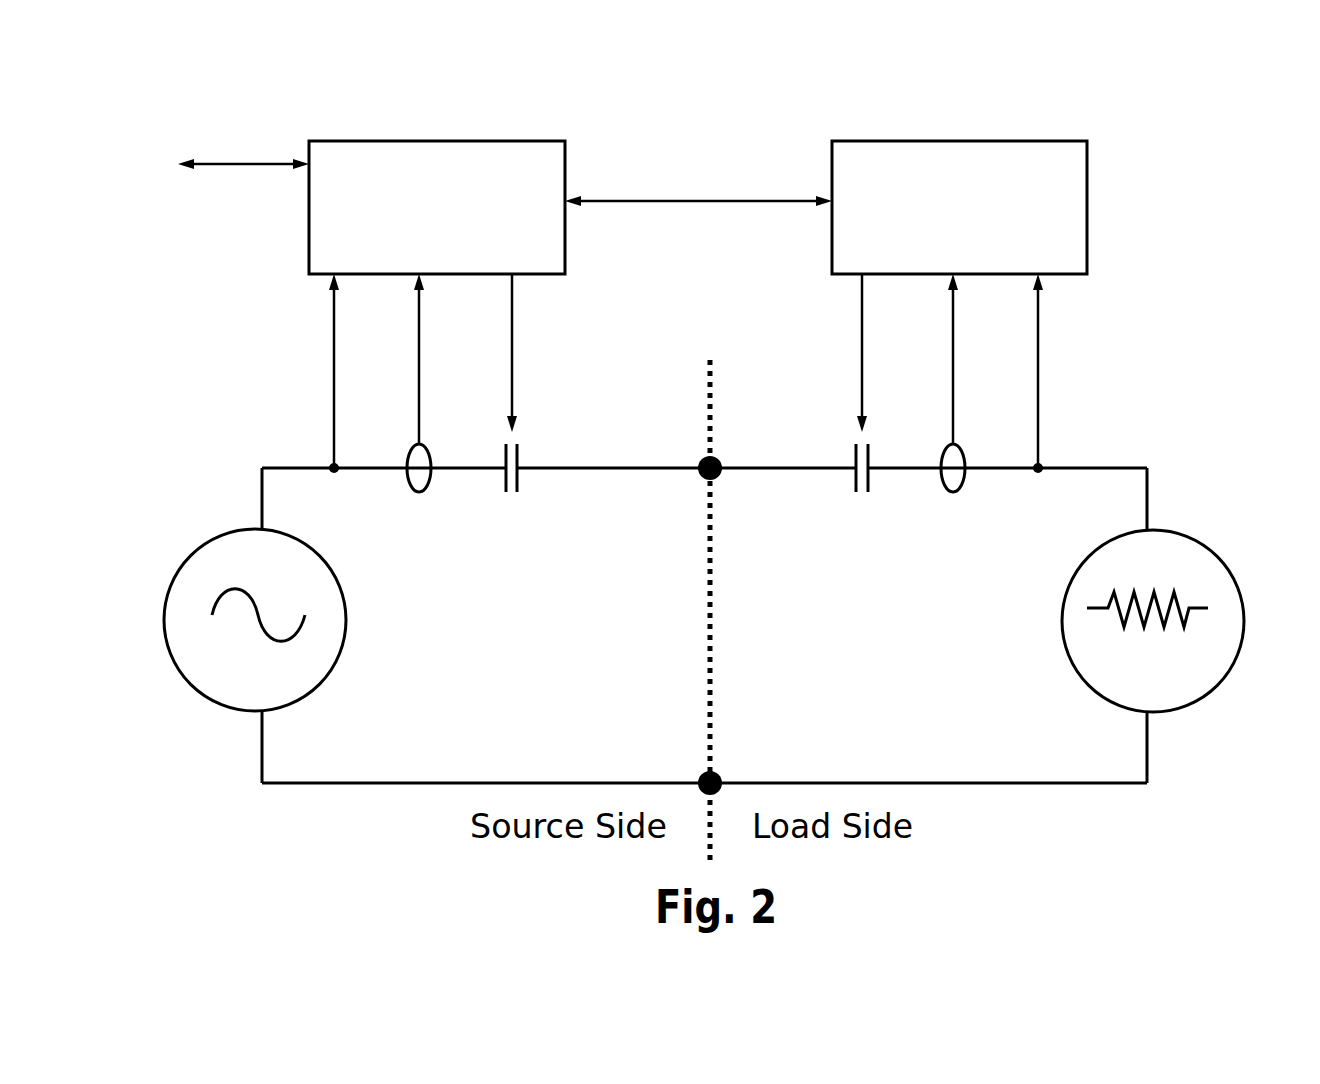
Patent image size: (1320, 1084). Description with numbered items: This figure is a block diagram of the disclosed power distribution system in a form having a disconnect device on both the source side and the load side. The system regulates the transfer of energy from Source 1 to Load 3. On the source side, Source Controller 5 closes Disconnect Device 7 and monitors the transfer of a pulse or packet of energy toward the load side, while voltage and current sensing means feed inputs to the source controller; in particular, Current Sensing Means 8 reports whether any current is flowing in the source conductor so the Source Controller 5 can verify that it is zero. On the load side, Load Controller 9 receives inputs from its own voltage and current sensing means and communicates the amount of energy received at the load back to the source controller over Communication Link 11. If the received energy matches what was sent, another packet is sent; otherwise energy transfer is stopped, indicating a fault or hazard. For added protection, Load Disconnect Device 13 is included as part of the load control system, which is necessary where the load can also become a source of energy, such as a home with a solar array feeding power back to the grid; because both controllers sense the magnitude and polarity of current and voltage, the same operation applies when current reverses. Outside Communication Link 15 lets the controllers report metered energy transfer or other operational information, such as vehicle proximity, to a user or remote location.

The Source 1 is at (225, 517).
The Load 3 is at (1243, 553).
The Source Controller 5 is at (297, 273).
The Disconnect Device 7 is at (528, 492).
The Current Sensing Means 8 is at (430, 492).
The Load Controller 9 is at (1110, 189).
The Communication Link 11 is at (686, 213).
The Load Disconnect Device 13 is at (845, 492).
The Outside Communication Link 15 is at (232, 153).